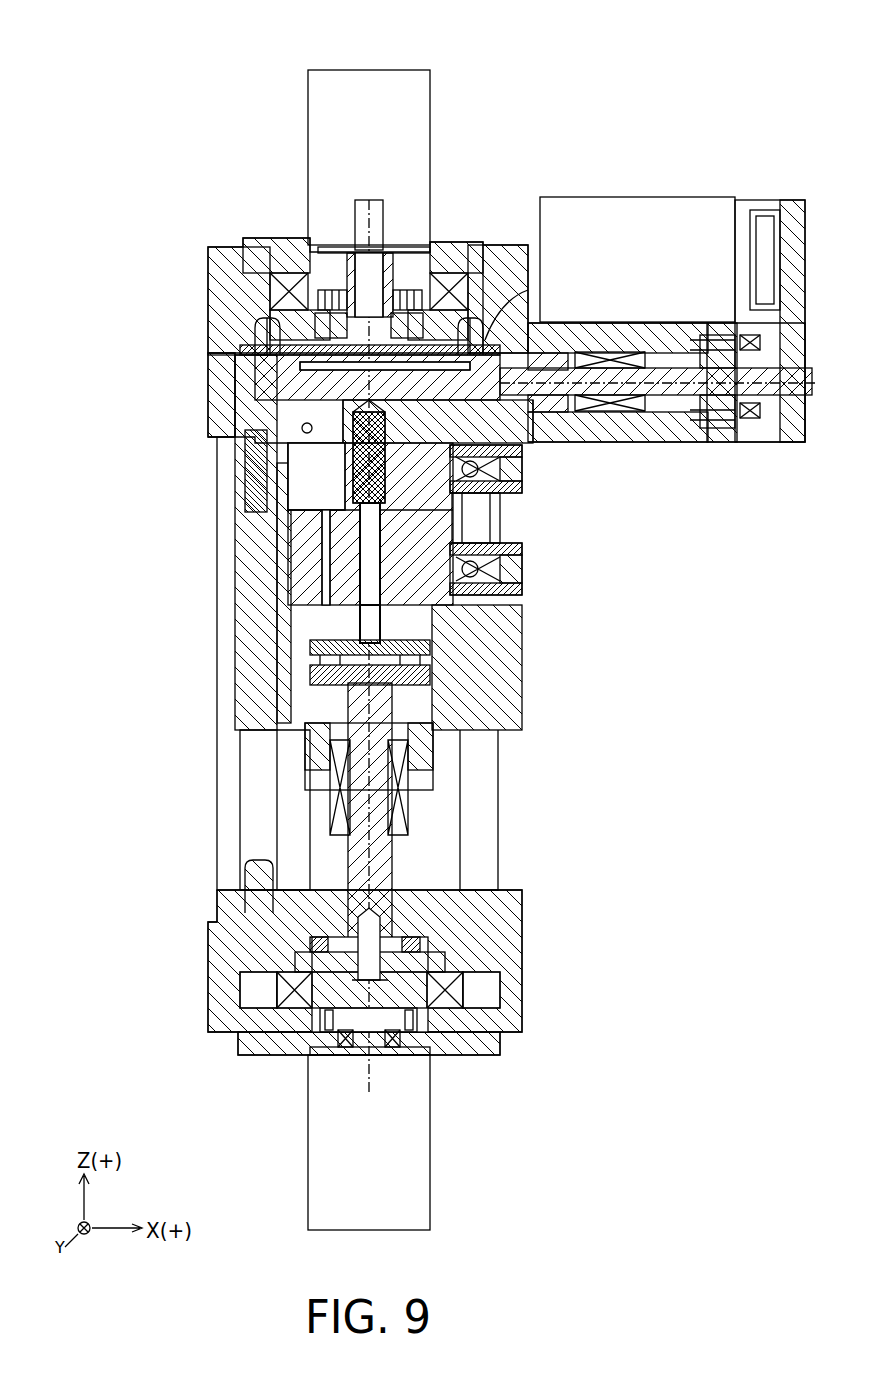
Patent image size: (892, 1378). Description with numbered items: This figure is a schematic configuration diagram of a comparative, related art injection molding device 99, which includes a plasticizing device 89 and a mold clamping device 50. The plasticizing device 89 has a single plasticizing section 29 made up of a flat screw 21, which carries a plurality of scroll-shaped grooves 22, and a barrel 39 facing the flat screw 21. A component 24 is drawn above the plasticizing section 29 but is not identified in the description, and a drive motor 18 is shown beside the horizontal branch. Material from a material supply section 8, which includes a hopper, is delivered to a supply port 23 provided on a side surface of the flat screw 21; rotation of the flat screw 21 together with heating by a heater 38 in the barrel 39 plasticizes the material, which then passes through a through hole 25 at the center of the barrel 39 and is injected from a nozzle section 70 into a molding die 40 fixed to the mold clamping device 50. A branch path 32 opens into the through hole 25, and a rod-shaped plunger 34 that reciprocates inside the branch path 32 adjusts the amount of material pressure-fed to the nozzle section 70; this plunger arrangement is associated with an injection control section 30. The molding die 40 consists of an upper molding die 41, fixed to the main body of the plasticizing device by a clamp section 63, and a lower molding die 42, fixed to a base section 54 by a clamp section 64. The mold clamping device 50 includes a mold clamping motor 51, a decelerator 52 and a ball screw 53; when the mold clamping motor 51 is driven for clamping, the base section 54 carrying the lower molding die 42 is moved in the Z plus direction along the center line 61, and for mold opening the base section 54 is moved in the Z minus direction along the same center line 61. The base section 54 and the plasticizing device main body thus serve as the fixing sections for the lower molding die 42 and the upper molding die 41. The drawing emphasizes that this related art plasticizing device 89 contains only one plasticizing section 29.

The material supply section 8 is at (515, 178).
The drive motor 18 is at (646, 197).
The flat screw 21 is at (440, 276).
The scroll-shaped grooves 22 is at (262, 282).
The supply port 23 is at (483, 335).
The motor 24 is at (322, 135).
The through hole 25 is at (252, 413).
The plasticizing section 29 is at (173, 363).
The injection control section 30 is at (660, 497).
The branch path 32 is at (540, 436).
The rod-shaped plunger 34 is at (590, 442).
The heater 38 is at (268, 335).
The barrel 39 is at (228, 385).
The molding die 40 is at (615, 516).
The upper molding die 41 is at (455, 495).
The lower molding die 42 is at (500, 553).
The mold clamping device 50 is at (645, 690).
The mold clamping motor 51 is at (410, 1102).
The decelerator 52 is at (470, 987).
The ball screw 53 is at (390, 880).
The base section 54 is at (522, 692).
The center line 61 is at (370, 218).
The clamp section 63 is at (522, 487).
The clamp section 64 is at (522, 592).
The nozzle section 70 is at (350, 488).
The plasticizing device 89 is at (611, 107).
The injection molding device 99 is at (717, 64).